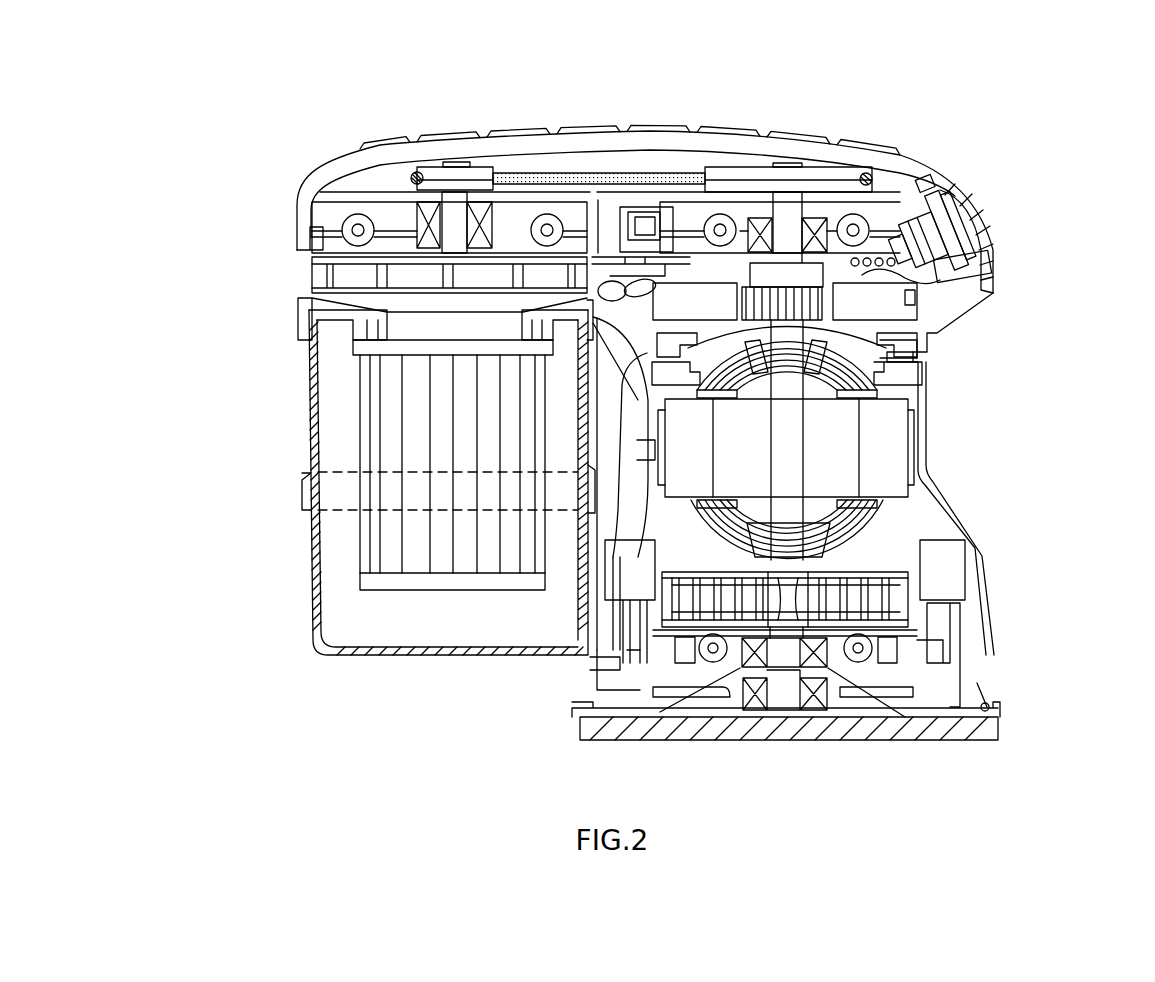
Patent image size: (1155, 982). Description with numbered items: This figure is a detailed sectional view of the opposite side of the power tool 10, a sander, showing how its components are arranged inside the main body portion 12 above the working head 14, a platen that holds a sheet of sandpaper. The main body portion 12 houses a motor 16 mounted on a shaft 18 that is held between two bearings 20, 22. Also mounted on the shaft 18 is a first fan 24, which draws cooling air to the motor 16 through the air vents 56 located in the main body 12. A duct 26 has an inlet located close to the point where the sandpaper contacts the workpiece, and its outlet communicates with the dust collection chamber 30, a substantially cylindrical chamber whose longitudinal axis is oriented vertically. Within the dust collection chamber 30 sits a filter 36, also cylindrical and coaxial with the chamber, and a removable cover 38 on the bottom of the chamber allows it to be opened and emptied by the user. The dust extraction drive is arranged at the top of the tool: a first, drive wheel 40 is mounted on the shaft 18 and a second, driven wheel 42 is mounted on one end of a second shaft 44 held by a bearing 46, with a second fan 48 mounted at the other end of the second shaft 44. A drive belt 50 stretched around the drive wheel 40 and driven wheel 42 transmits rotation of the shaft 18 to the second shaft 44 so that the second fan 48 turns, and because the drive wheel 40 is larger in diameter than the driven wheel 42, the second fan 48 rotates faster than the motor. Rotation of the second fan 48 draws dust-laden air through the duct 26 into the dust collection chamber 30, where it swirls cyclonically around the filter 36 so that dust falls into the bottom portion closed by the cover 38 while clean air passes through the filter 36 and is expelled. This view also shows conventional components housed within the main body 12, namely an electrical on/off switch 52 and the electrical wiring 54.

The power tool 10 is at (1003, 195).
The main body portion 12 is at (953, 522).
The working head 14 is at (943, 730).
The motor 16 is at (825, 447).
The shaft 18 is at (790, 207).
The bearing 20 is at (757, 645).
The bearing 22 is at (813, 220).
The first fan 24 is at (867, 601).
The duct 26 is at (653, 487).
The dust collection chamber 30 is at (312, 380).
The filter 36 is at (412, 436).
The removable cover 38 is at (316, 578).
The drive wheel 40 is at (738, 177).
The driven wheel 42 is at (438, 180).
The second shaft 44 is at (460, 205).
The bearing 46 is at (423, 210).
The second fan 48 is at (347, 278).
The drive belt 50 is at (594, 172).
The electrical on/off switch 52 is at (927, 243).
The electrical wiring 54 is at (697, 213).
The air vents 56 is at (917, 358).